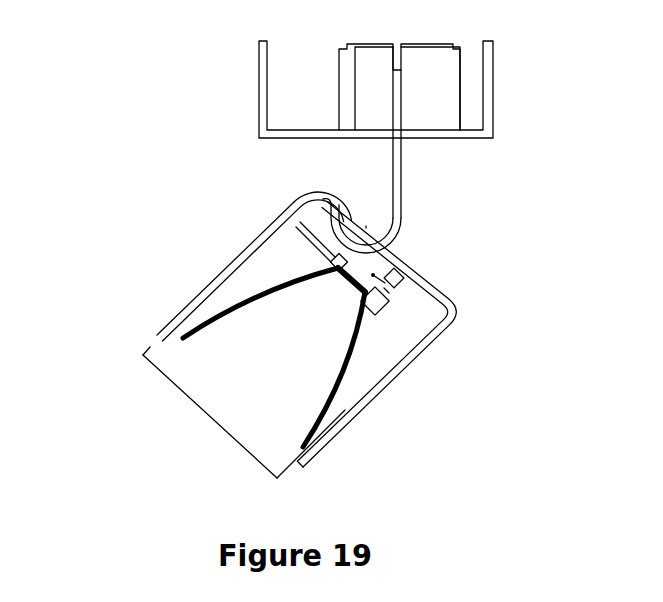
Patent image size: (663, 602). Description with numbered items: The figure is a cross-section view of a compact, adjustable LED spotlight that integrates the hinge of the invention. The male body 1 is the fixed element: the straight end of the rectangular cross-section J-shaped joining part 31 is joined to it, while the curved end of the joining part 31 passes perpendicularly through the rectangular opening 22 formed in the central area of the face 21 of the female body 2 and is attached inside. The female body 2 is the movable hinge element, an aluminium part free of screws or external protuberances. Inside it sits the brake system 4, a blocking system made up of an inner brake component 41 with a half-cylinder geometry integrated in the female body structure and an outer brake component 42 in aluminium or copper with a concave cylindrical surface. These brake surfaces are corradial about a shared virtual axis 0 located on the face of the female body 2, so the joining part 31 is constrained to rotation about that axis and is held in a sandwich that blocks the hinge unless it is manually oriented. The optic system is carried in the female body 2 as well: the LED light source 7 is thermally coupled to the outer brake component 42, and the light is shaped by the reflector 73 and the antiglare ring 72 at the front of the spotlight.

The male body 1 is at (252, 113).
The virtual axis 0 is at (370, 213).
The inner brake component 41 is at (345, 197).
The spring strip 4 is at (285, 210).
The J-shaped joining part 31 is at (413, 181).
The opening 22 is at (402, 243).
The face 21 is at (428, 271).
The LED light source 7 is at (343, 287).
The outer brake component 42 is at (395, 303).
The antiglare ring 72 is at (177, 370).
The female body 2 is at (377, 407).
The reflector 73 is at (313, 398).